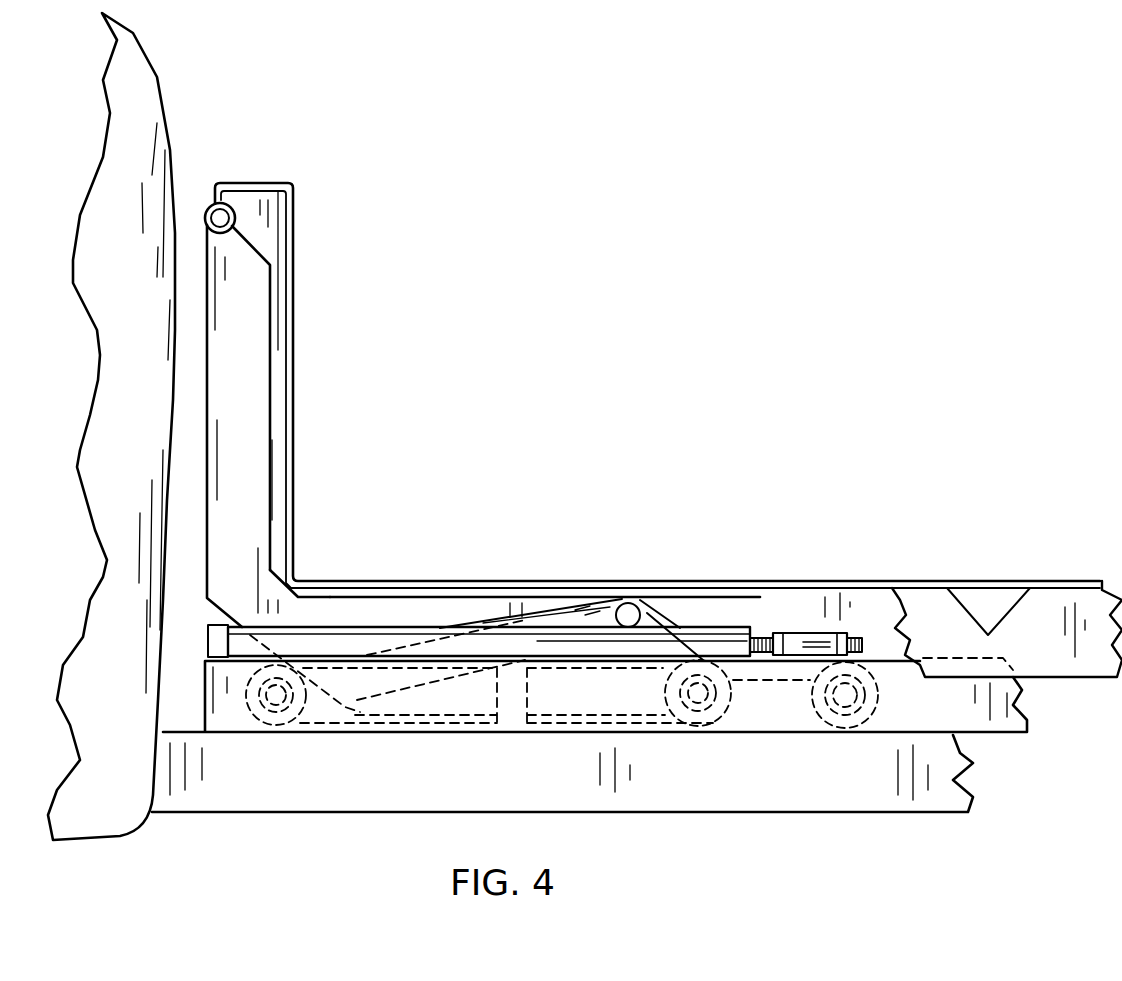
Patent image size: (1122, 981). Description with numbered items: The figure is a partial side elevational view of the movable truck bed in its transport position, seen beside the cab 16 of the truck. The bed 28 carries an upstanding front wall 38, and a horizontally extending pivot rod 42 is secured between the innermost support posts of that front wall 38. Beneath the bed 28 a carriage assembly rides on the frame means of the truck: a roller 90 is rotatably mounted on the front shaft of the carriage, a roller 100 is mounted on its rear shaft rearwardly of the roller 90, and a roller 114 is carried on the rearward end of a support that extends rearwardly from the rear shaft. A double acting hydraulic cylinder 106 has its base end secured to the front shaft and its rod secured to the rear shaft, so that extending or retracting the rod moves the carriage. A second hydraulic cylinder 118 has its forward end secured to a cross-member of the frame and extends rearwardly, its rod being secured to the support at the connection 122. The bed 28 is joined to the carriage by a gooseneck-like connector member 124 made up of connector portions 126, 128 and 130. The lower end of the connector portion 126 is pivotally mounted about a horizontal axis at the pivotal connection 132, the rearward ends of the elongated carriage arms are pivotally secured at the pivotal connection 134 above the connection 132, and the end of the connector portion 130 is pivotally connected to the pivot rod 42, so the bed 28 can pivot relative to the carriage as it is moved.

The cab 16 is at (145, 107).
The pivot rod 42 is at (222, 218).
The upstanding front wall 38 is at (295, 325).
The frame portion 130 is at (252, 397).
The gooseneck-like connector member 124 is at (250, 465).
The frame portion 128 is at (268, 595).
The frame portion 126 is at (412, 612).
The pivotal connection 134 is at (637, 596).
The hydraulic cylinder 118 is at (713, 631).
The rod connection 122 is at (803, 638).
The bed 28 is at (1034, 575).
The roller 90 is at (283, 713).
The hydraulic cylinder 106 is at (450, 700).
The roller 100 is at (700, 718).
The pivotal connection 132 is at (703, 660).
The roller 114 is at (876, 705).